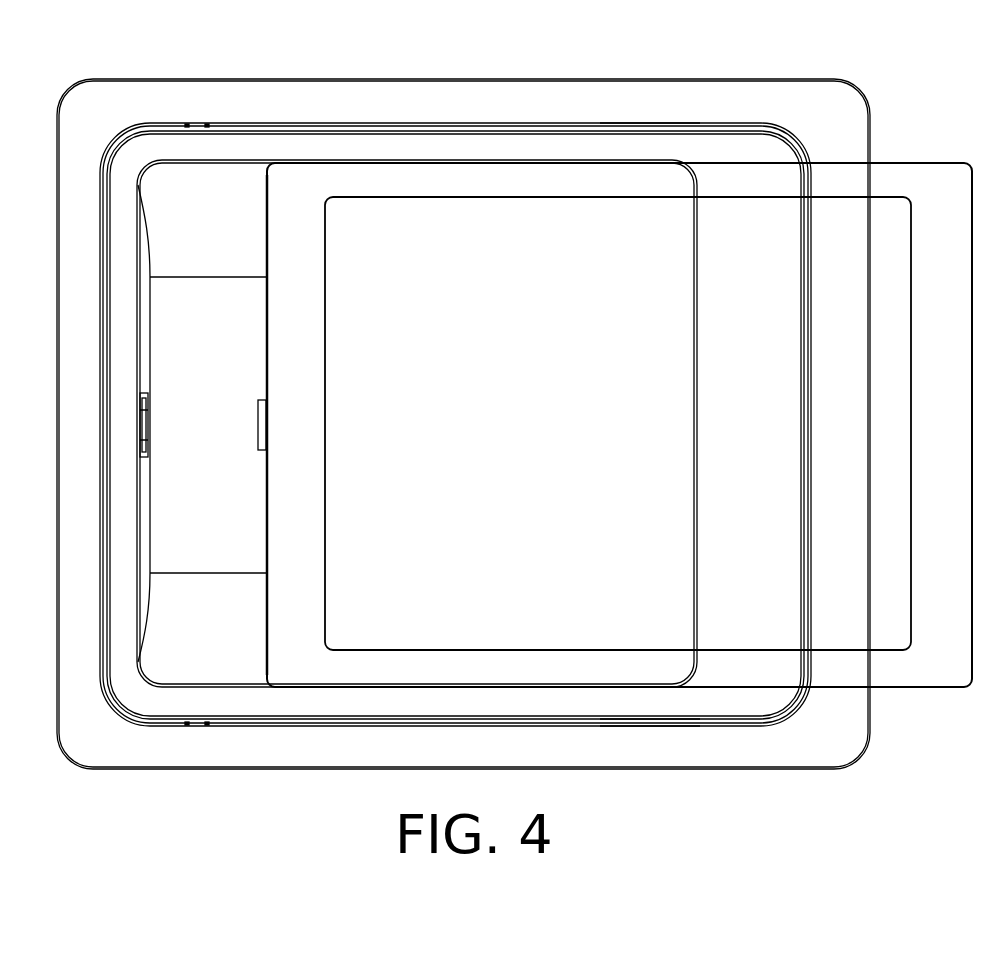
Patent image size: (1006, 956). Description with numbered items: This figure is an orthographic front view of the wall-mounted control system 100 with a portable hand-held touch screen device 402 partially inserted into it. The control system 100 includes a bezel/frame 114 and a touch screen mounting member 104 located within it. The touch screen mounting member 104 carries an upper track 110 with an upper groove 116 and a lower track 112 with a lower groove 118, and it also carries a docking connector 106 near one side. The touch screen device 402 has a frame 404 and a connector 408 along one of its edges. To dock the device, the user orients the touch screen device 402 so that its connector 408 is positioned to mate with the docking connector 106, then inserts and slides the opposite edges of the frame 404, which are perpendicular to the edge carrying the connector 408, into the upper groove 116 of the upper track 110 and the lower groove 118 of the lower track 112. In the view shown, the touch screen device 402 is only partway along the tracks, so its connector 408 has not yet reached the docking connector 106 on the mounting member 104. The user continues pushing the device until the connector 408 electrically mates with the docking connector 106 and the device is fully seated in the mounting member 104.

The wall-mounted control system 100 is at (540, 78).
The touch screen mounting member 104 is at (224, 622).
The docking connector 106 is at (148, 422).
The upper track 110 is at (572, 145).
The lower track 112 is at (578, 706).
The bezel/frame 114 is at (456, 112).
The upper groove 116 is at (677, 163).
The lower groove 118 is at (680, 688).
The portable hand-held touch screen device 402 is at (663, 416).
The frame 404 is at (285, 252).
The connector 408 is at (258, 415).